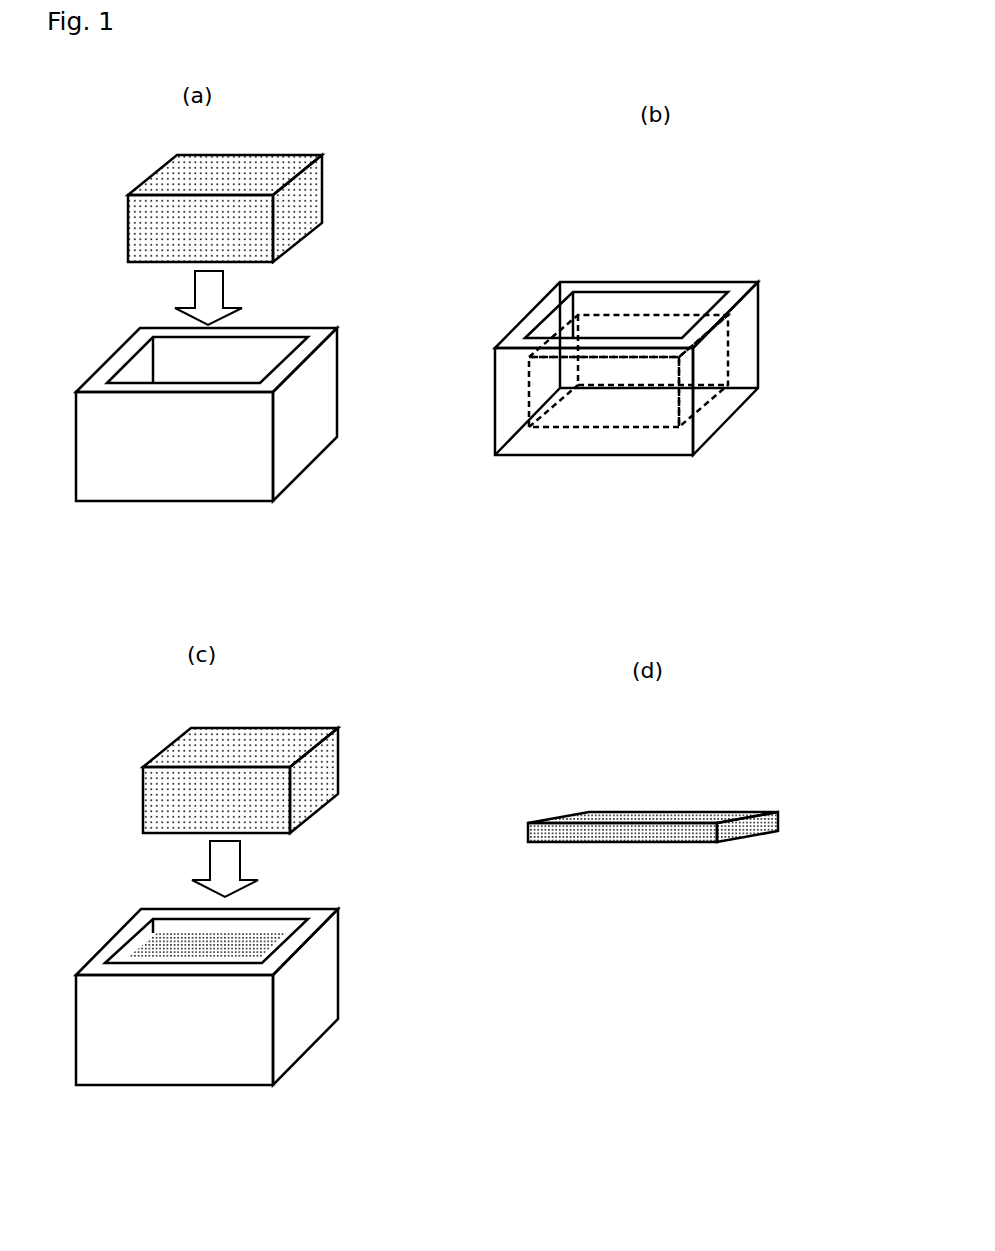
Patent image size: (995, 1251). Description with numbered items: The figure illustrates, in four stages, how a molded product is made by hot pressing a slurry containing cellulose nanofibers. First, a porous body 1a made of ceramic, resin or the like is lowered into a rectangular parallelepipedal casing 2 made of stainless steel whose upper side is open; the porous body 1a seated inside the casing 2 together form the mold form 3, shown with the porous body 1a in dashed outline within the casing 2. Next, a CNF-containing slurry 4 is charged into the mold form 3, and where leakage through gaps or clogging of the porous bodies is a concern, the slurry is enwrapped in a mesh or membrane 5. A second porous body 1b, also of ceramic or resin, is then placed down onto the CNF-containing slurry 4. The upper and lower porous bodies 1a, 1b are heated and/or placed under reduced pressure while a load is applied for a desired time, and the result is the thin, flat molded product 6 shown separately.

The porous body 1a is at (252, 170).
The porous body 1b is at (253, 740).
The casing 2 is at (253, 487).
The mold form 3 is at (757, 272).
The CNF-containing slurry 4 is at (255, 940).
The mesh or membrane 5 is at (261, 895).
The molded product 6 is at (670, 832).